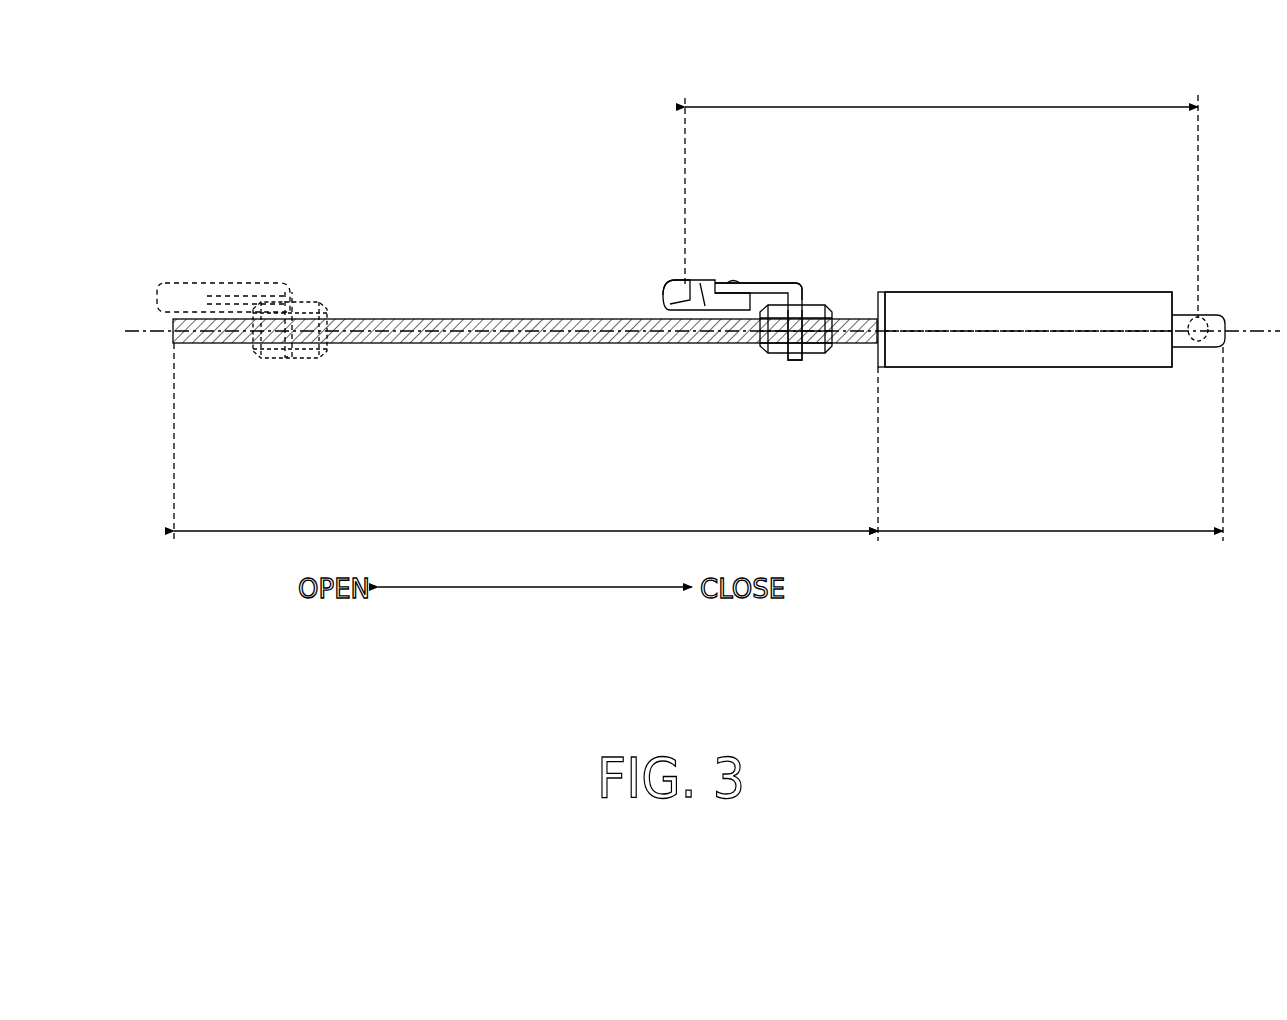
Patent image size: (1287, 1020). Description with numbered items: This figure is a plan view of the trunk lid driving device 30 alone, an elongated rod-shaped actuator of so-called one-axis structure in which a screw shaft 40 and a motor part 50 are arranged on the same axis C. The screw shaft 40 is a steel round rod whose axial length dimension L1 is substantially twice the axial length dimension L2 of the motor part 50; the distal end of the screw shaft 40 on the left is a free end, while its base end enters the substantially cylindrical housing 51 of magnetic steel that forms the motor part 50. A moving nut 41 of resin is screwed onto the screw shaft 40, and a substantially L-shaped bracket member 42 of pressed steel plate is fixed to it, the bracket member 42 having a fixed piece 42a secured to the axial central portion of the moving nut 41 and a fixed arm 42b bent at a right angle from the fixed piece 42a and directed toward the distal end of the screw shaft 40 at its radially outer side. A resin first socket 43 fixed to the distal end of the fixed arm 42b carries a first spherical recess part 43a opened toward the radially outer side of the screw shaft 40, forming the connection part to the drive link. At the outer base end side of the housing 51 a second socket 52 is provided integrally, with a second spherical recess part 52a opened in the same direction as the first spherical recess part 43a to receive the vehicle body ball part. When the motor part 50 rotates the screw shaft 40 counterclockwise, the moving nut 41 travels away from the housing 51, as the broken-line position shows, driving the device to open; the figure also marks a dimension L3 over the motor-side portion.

The trunk lid driving device 30 is at (474, 206).
The screw shaft 40 is at (467, 344).
The moving nut 41 is at (262, 360).
The bracket member 42 is at (283, 290).
The fixed piece 42a is at (815, 359).
The fixed arm 42b is at (757, 282).
The first socket 43 is at (175, 282).
The first spherical recess part 43a is at (680, 265).
The motor part 50 is at (1046, 291).
The housing 51 is at (1010, 368).
The second socket 52 is at (1190, 350).
The second spherical recess part 52a is at (1195, 318).
The axis C is at (937, 330).
The length dimension of the screw shaft L1 is at (526, 442).
The length dimension of the motor part L2 is at (1050, 444).
The length L3 is at (941, 194).